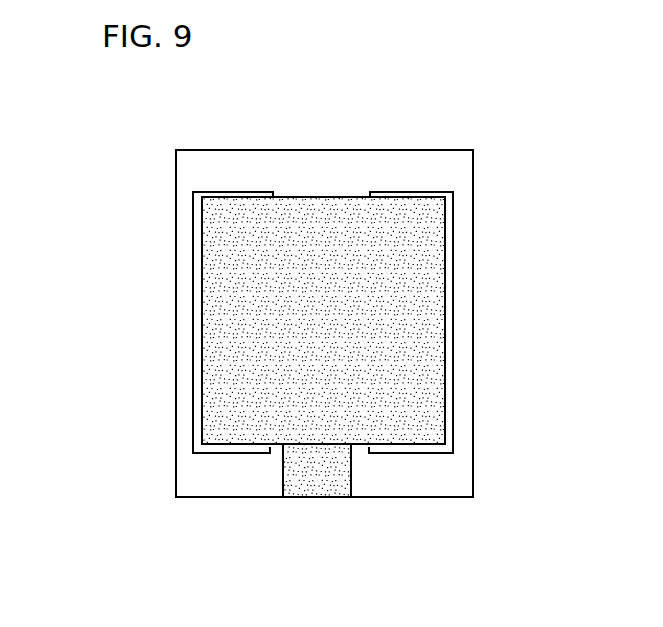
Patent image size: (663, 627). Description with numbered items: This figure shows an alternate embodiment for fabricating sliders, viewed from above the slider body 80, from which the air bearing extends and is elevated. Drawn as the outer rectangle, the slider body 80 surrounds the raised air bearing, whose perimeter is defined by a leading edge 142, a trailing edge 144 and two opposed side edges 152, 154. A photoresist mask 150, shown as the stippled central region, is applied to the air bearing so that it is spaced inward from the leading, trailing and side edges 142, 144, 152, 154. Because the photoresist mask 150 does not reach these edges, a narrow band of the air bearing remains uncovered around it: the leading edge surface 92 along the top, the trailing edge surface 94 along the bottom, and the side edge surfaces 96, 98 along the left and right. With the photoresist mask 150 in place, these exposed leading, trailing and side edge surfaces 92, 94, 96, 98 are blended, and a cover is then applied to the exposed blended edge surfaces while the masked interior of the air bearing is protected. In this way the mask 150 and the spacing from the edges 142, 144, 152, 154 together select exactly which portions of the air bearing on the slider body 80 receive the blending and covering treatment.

The slider body 80 is at (458, 180).
The leading edge surface of the air bearing 92 is at (257, 190).
The trailing edge surface of the air bearing 94 is at (233, 455).
The side edge surface of the air bearing 96 is at (192, 365).
The side edge surface of the air bearing 98 is at (453, 266).
The leading edge 142 is at (231, 182).
The trailing edge 144 is at (205, 455).
The photoresist mask 150 is at (216, 320).
The side edge 152 is at (192, 337).
The side edge 154 is at (453, 322).